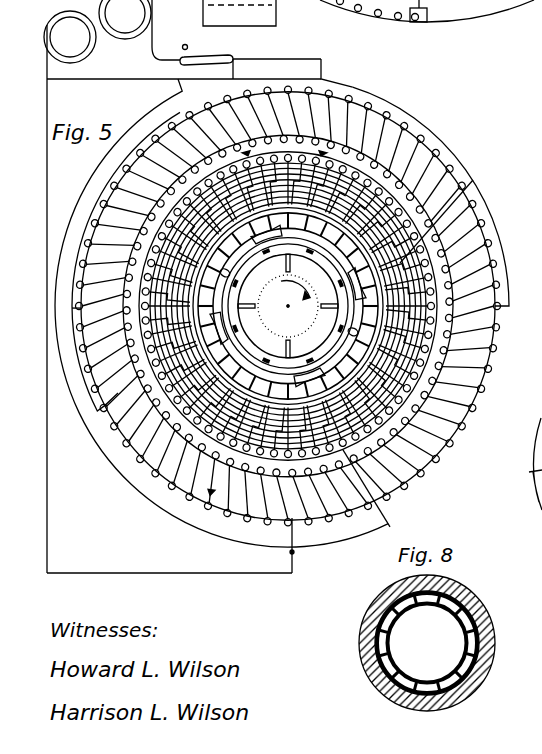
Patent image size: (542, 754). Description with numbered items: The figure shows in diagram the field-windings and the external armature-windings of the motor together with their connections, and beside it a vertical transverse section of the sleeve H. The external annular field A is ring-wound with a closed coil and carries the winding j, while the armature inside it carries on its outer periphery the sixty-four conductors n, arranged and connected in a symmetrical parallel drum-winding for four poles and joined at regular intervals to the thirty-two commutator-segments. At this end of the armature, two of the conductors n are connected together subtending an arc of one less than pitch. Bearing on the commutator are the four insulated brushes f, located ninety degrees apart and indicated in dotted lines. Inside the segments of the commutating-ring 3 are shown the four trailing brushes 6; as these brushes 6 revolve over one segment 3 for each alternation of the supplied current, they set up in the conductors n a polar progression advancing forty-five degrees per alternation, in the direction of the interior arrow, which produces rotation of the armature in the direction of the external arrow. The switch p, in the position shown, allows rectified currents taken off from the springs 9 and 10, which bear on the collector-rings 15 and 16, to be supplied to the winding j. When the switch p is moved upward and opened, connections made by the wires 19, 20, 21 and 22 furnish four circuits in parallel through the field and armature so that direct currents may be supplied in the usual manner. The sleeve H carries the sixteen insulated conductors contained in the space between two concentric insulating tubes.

In FIG. 5, the commutating-ring 3 is at (288, 306).
In FIG. 5, the trailing brushes 6 is at (288, 306).
In FIG. 5, the spring 9 is at (39, 299).
In FIG. 5, the spring 10 is at (166, 30).
In FIG. 5, the collector-ring 15 is at (70, 37).
In FIG. 5, the collector-ring 16 is at (125, 19).
In FIG. 5, the wire 19 is at (317, 545).
In FIG. 5, the wire 20 is at (184, 316).
In FIG. 5, the wire 21 is at (123, 261).
In FIG. 5, the wire 22 is at (404, 182).
In FIG. 5, the external annular field A is at (288, 305).
In FIG. 5, the insulated brushes f is at (408, 353).
In FIG. 5, the armature conductors h is at (287, 296).
In FIG. 5, the winding j is at (275, 313).
In FIG. 5, the conductors n is at (288, 306).
In FIG. 5, the switch p is at (203, 56).
In FIG. 8, the commutator segments l is at (445, 603).
In FIG. 8, the sleeve H is at (434, 643).